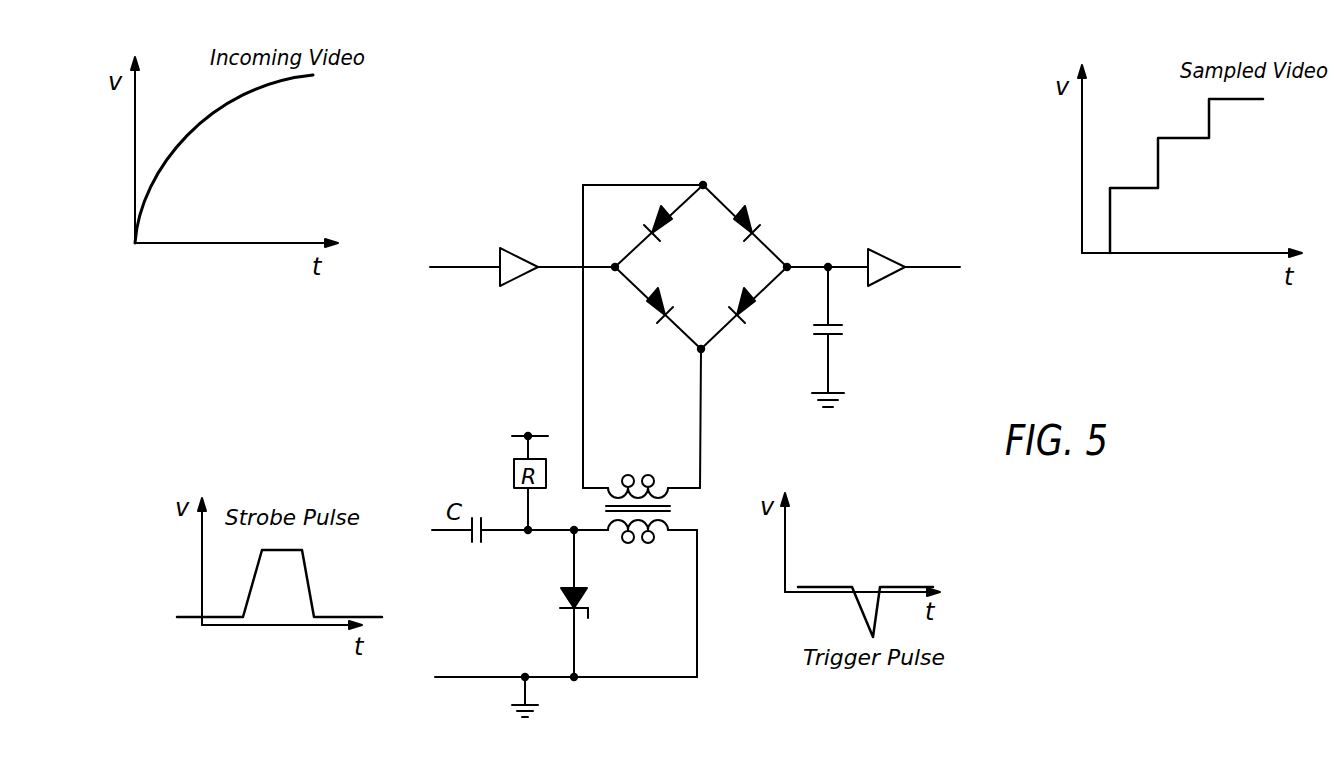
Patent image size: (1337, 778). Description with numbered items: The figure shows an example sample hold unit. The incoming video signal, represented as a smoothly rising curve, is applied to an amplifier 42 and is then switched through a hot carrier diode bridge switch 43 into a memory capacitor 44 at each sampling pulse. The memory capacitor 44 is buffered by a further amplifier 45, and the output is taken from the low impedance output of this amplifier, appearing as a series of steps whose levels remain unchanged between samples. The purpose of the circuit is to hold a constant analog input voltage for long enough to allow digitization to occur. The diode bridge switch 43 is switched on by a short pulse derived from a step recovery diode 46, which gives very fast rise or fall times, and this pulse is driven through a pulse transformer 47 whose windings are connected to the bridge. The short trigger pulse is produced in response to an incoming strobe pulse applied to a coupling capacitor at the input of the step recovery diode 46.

The amplifier 42 is at (519, 256).
The hot carrier diode bridge switch 43 is at (674, 202).
The memory capacitor 44 is at (816, 337).
The further amplifier 45 is at (892, 259).
The step recovery diode 46 is at (592, 599).
The pulse transformer 47 is at (637, 483).